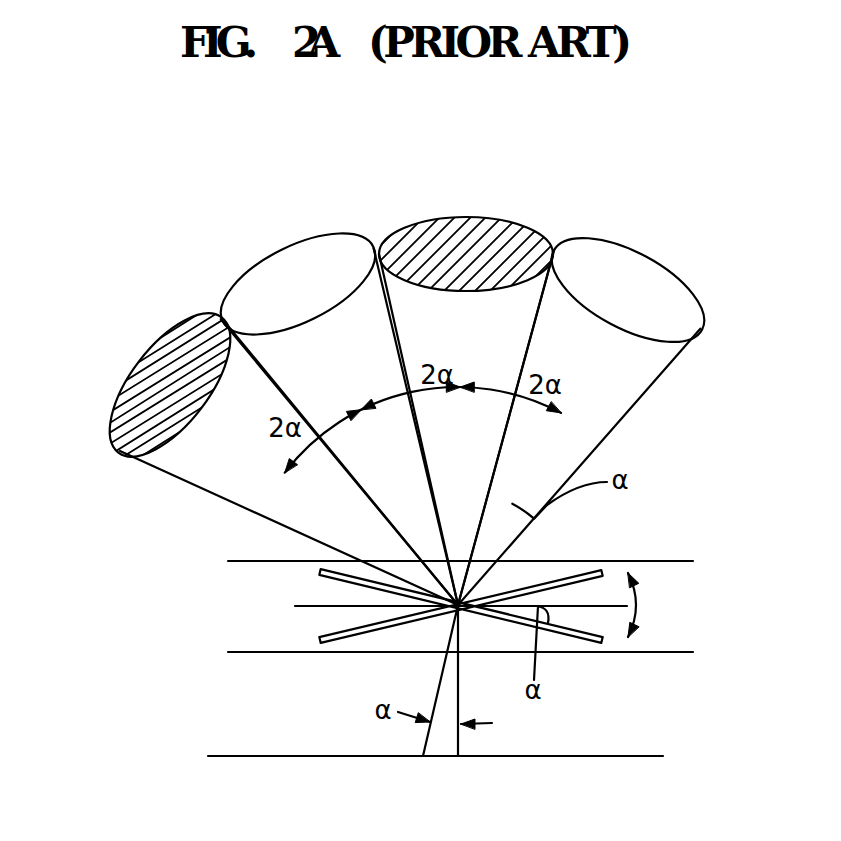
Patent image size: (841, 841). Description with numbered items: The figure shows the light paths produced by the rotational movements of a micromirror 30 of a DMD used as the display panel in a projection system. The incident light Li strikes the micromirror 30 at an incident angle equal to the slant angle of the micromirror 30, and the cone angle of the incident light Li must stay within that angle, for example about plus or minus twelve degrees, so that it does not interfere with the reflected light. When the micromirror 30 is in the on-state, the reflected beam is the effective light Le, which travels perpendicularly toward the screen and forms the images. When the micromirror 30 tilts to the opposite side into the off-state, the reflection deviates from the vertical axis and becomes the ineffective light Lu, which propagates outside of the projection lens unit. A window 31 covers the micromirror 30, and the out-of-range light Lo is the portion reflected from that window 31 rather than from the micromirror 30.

The micromirror 30 is at (582, 645).
The window 31 is at (615, 560).
The ineffective light Lu is at (458, 605).
The out-of-range light Lo is at (458, 605).
The effective light Le is at (458, 605).
The incident light Li is at (458, 605).